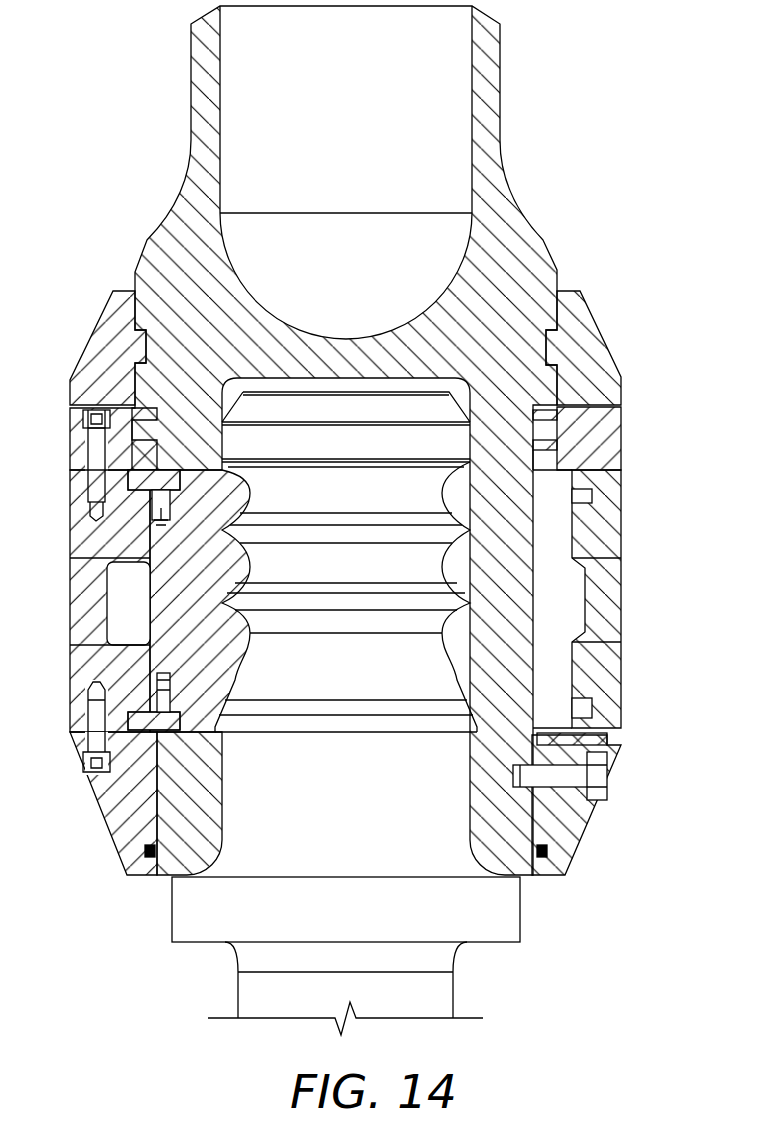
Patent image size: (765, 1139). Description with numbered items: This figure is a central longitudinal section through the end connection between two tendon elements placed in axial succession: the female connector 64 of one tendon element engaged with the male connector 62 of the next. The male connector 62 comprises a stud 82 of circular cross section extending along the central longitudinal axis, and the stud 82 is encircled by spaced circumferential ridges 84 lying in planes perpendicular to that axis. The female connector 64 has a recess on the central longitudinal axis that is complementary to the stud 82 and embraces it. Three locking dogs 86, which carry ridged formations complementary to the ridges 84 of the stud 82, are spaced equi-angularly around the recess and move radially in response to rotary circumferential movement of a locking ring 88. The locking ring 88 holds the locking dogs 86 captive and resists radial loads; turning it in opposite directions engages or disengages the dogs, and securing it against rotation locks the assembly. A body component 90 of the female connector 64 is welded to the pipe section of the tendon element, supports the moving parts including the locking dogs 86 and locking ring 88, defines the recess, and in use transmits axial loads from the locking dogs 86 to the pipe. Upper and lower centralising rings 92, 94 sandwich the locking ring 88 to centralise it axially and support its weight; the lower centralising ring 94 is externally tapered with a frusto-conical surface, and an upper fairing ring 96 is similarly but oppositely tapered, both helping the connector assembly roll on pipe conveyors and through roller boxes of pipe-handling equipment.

The male connector 62 is at (582, 912).
The female connector 64 is at (130, 80).
The stud 82 is at (420, 667).
The circumferential ridges 84 is at (453, 533).
The locking dogs 86 is at (237, 660).
The locking ring 88 is at (613, 582).
The body component 90 is at (516, 202).
The upper centralising ring 92 is at (613, 438).
The lower centralising ring 94 is at (572, 846).
The upper fairing ring 96 is at (592, 336).